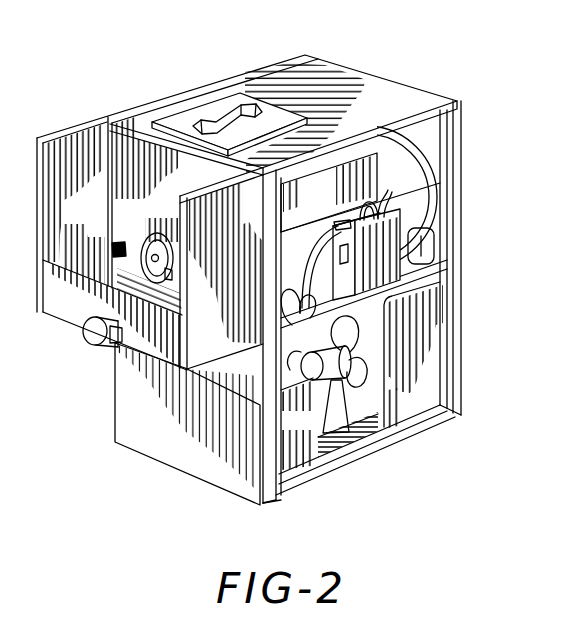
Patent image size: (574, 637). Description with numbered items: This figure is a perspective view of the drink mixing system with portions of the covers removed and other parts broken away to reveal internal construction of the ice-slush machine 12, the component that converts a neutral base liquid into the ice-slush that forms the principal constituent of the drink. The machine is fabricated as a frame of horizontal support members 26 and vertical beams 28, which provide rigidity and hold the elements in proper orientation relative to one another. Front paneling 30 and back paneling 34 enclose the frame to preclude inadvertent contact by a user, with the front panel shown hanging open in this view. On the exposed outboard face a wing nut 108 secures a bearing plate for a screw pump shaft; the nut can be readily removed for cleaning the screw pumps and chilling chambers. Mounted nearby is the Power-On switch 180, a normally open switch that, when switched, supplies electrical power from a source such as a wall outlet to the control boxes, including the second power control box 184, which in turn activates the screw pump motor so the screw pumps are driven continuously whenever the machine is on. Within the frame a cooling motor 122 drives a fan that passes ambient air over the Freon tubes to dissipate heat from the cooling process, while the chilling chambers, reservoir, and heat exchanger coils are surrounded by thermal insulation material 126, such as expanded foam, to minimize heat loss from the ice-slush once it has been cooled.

The ice-slush machine 12 is at (468, 122).
The horizontal support members 26 is at (360, 452).
The vertical beams 28 is at (277, 490).
The front paneling 30 is at (183, 450).
The back paneling 34 is at (427, 400).
The wing nut 108 is at (148, 247).
The cooling motor 122 is at (329, 363).
The thermal insulation material 126 is at (334, 202).
The Power-On switch 180 is at (112, 246).
The second power control box 184 is at (378, 300).